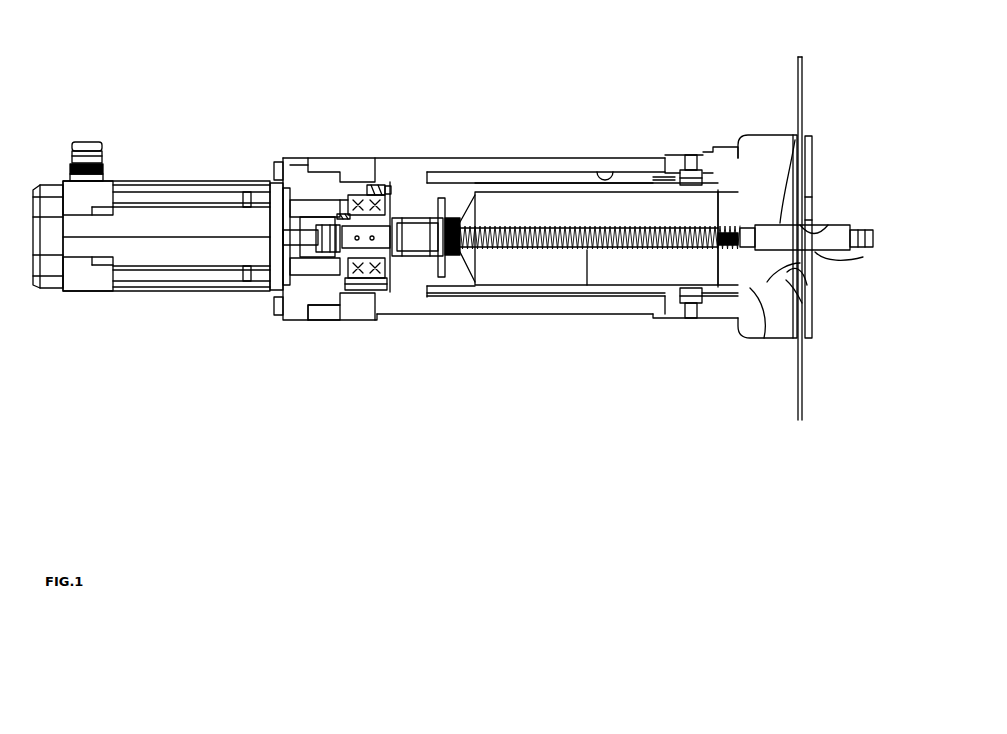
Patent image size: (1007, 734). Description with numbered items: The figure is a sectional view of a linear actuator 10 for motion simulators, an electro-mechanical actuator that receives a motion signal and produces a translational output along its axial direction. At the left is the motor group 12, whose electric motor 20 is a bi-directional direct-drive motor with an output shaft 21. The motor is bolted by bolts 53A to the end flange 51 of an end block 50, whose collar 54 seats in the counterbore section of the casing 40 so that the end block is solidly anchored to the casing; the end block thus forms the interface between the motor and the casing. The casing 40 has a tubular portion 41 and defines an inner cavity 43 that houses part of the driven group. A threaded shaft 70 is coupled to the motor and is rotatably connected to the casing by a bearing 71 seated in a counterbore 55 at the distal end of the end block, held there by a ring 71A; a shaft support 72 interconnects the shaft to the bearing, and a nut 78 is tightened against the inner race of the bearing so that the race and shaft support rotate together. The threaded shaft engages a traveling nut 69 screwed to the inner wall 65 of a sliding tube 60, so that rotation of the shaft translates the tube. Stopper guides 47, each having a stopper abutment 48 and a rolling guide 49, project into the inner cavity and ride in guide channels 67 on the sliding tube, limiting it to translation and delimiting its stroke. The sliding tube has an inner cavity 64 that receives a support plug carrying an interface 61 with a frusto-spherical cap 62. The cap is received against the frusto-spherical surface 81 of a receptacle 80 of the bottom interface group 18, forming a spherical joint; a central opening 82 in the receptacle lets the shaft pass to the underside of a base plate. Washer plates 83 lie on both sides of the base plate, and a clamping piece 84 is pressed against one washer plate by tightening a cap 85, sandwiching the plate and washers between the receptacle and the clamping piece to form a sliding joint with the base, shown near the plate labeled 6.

The mounting surface 6 is at (798, 70).
The linear actuator 10 is at (500, 118).
The motor group 12 is at (150, 147).
The bottom interface group 18 is at (772, 93).
The electric motor 20 is at (183, 181).
The output shaft 21 is at (305, 240).
The casing 40 is at (413, 153).
The tubular portion 41 is at (460, 160).
The inner cavity 43 is at (520, 287).
The stopper guides 47 is at (682, 156).
The stopper abutment 48 is at (657, 158).
The rolling guide 49 is at (708, 150).
The end block 50 is at (281, 333).
The end flange 51 is at (298, 170).
The bolts 53A is at (274, 168).
The collar 54 is at (318, 318).
The counterbore 55 is at (368, 194).
The sliding tube 60 is at (528, 192).
The interface 61 is at (813, 227).
The frusto-spherical cap 62 is at (766, 332).
The inner cavity 64 is at (606, 195).
The inner wall 65 is at (468, 206).
The guide channels 67 is at (613, 175).
The traveling nut 69 is at (410, 218).
The threaded shaft 70 is at (585, 255).
The bearing 71 is at (367, 278).
The ring 71A is at (377, 190).
The shaft support 72 is at (392, 286).
The nut 78 is at (342, 200).
The receptacle 80 is at (769, 335).
The frusto-spherical surface 81 is at (780, 220).
The central opening 82 is at (802, 303).
The washer plates 83 is at (797, 135).
The clamping piece 84 is at (808, 278).
The cap 85 is at (822, 257).